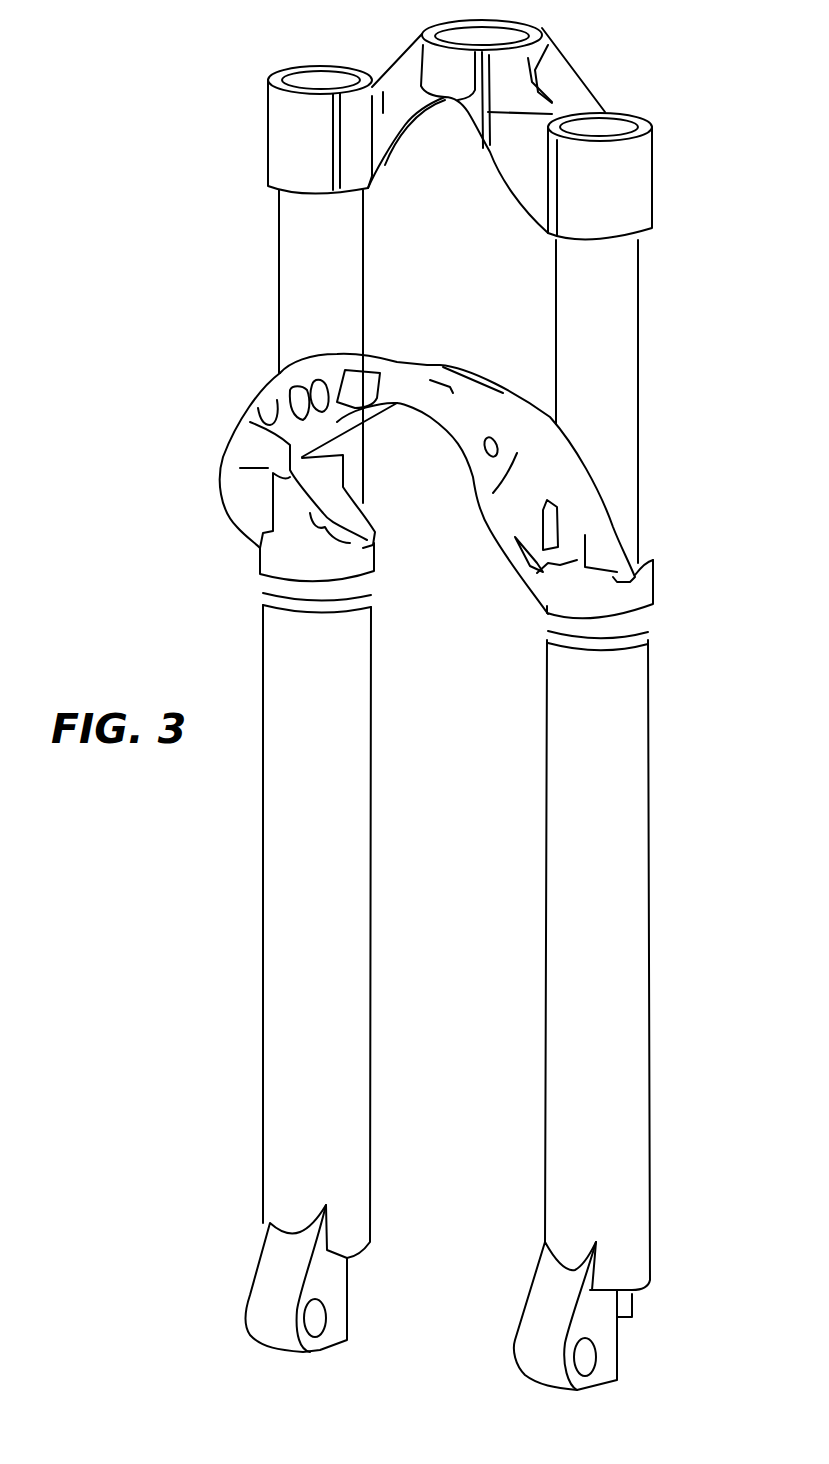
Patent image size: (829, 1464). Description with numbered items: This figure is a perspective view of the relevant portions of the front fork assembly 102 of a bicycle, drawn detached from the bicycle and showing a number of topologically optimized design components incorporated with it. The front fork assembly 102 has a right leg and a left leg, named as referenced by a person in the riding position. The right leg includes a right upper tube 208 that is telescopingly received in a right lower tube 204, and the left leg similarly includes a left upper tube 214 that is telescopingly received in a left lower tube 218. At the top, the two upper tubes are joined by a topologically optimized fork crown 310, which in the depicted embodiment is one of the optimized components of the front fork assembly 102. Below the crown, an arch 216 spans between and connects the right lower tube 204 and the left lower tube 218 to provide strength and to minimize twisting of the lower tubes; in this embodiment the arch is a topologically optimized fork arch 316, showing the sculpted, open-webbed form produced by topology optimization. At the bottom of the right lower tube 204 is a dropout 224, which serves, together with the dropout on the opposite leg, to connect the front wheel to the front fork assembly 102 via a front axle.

The front fork assembly 102 is at (156, 131).
The topologically optimized fork crown 310 is at (580, 65).
The right upper tube 208 is at (278, 298).
The left upper tube 214 is at (640, 353).
The topologically optimized fork arch 316 is at (453, 363).
The right lower tube 204 is at (262, 937).
The left lower tube 218 is at (648, 935).
The dropout 224 is at (262, 1293).
The arch 216 is at (605, 1333).